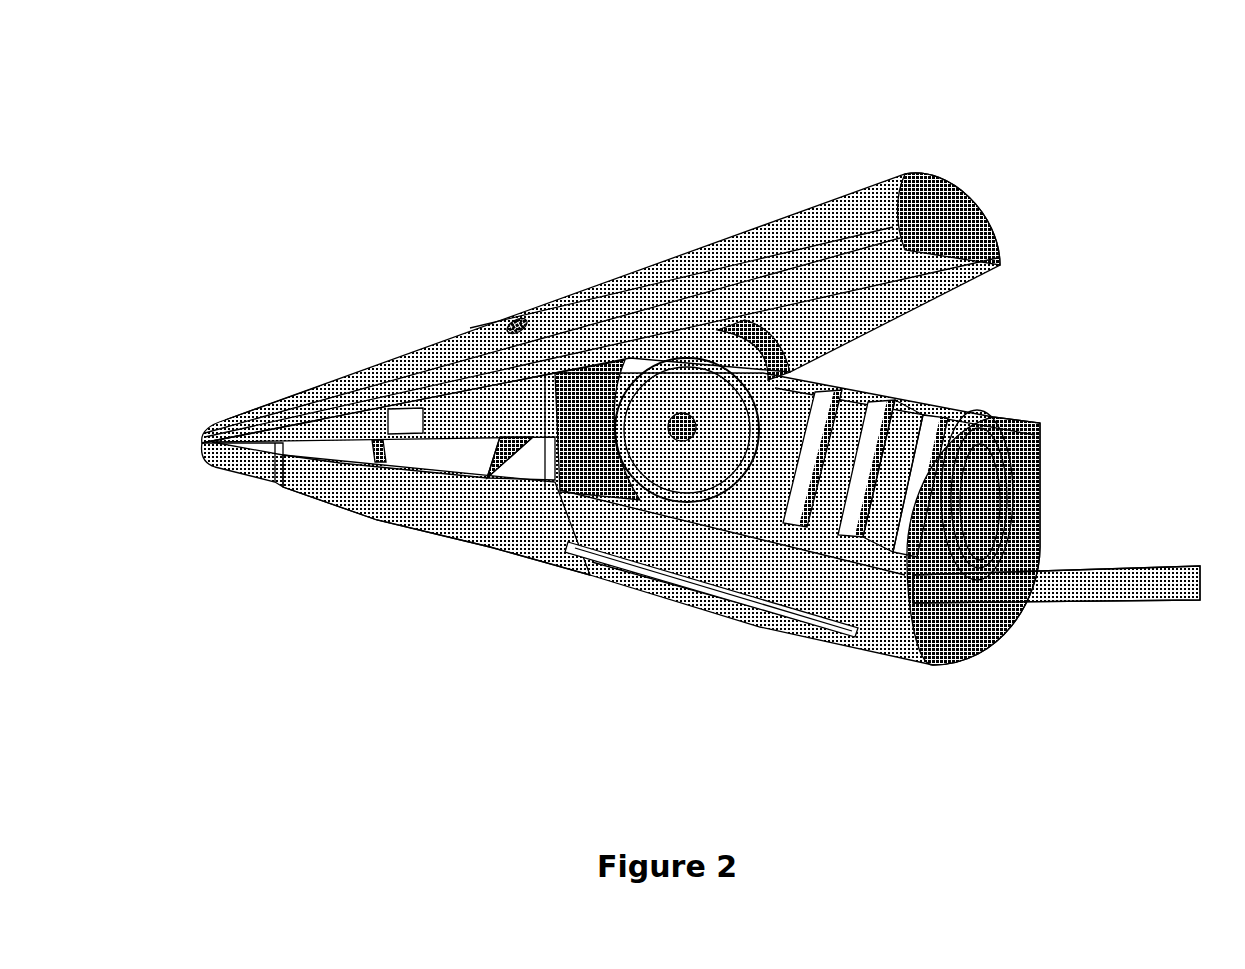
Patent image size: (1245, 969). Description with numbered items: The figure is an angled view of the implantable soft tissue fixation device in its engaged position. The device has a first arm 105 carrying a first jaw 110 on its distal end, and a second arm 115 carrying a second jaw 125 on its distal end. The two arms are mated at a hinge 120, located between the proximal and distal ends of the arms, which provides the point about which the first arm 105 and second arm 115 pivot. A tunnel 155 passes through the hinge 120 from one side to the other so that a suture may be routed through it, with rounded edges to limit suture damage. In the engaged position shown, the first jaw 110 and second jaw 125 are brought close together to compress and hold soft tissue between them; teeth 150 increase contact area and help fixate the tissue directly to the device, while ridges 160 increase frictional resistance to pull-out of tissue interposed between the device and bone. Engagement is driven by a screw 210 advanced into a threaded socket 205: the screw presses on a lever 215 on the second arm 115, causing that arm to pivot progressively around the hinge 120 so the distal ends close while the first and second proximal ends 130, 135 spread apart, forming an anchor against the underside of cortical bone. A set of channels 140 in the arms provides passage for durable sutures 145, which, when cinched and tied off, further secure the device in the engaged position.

The first arm 105 is at (540, 545).
The first jaw 110 is at (367, 492).
The second arm 115 is at (775, 240).
The hinge 120 is at (690, 365).
The second jaw 125 is at (290, 418).
The first proximal end 130 is at (945, 635).
The second proximal end 135 is at (940, 210).
The channels 140 is at (515, 322).
The sutures 145 is at (535, 428).
The teeth 150 is at (275, 443).
The tunnel 155 is at (680, 425).
The ridges 160 is at (857, 530).
The threaded socket 205 is at (975, 445).
The screw 210 is at (985, 505).
The lever 215 is at (855, 315).